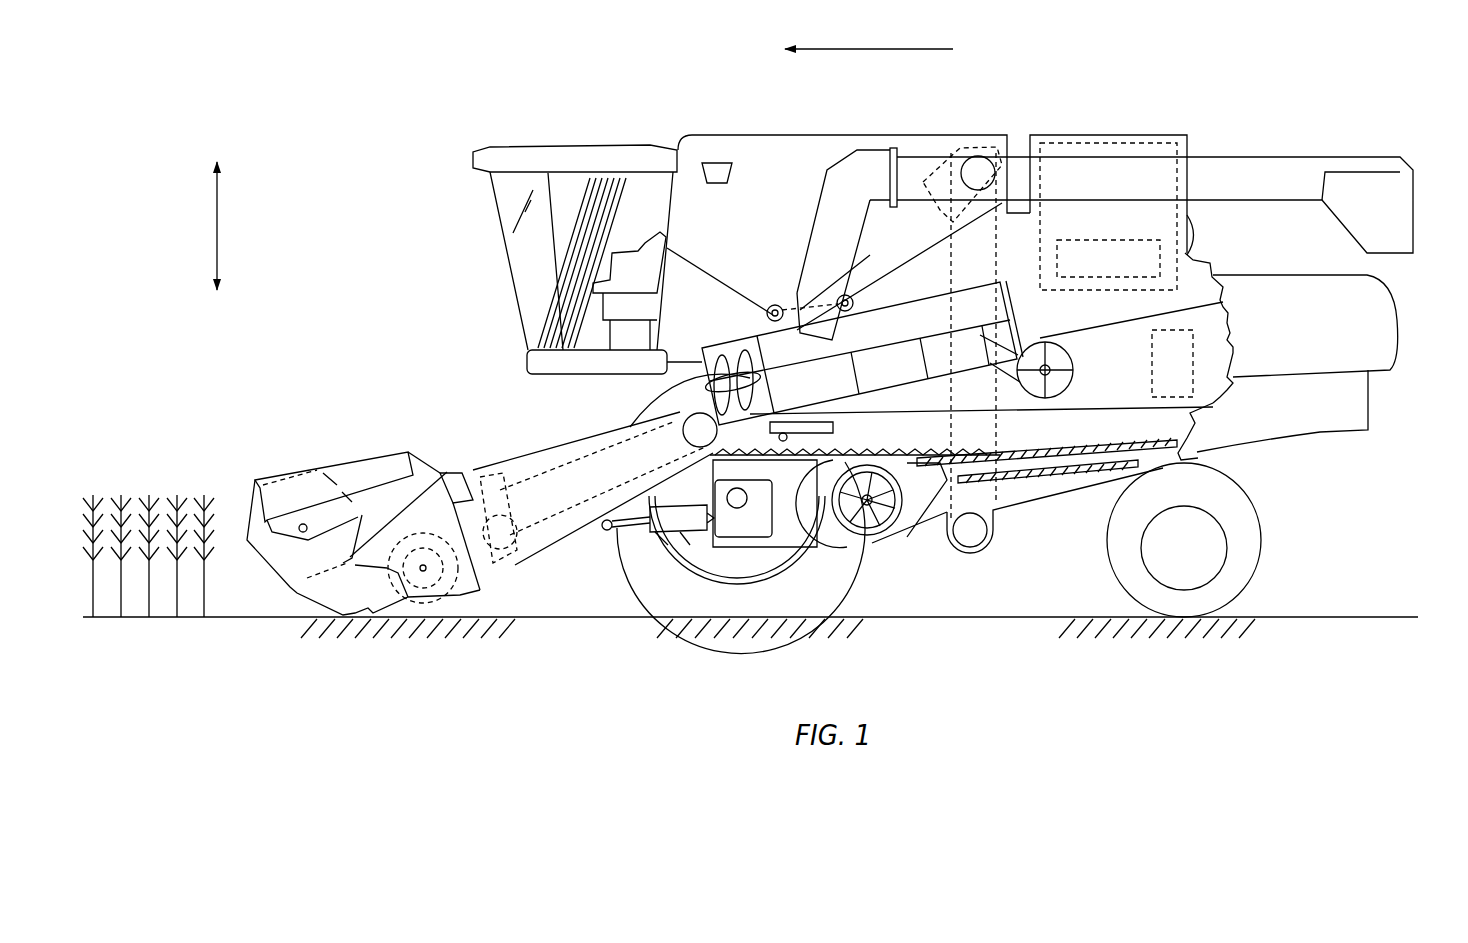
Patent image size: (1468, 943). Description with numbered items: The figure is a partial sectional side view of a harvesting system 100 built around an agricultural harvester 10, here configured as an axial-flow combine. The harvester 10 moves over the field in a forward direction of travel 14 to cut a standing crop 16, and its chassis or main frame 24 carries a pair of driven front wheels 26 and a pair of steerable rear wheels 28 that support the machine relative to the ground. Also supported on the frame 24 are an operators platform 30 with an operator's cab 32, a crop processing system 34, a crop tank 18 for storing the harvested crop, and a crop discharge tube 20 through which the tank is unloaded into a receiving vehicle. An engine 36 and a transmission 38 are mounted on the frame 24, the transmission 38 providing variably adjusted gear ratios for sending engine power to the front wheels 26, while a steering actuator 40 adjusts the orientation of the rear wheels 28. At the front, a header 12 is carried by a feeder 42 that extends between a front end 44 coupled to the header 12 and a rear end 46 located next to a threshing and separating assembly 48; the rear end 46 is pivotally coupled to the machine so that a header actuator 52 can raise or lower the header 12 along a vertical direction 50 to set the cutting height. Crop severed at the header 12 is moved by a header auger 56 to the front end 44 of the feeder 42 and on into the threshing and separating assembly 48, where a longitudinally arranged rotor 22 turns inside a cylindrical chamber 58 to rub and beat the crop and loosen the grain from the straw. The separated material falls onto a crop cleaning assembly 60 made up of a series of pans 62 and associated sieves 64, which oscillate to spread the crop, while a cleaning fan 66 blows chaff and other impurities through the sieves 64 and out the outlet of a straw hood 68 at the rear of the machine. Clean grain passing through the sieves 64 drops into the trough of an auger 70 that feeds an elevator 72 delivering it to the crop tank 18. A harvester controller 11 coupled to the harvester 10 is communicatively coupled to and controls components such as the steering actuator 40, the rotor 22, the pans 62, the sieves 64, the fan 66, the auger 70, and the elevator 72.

The harvesting system 100 is at (346, 108).
The agricultural harvester 10 is at (533, 98).
The harvester controller 11 is at (722, 160).
The header 12 is at (301, 458).
The forward direction of travel 14 is at (887, 47).
The standing crop 16 is at (165, 493).
The crop tank 18 is at (767, 133).
The crop discharge tube 20 is at (1247, 170).
The rotor 22 is at (727, 347).
The frame 24 is at (1192, 458).
The front wheels 26 is at (677, 583).
The rear wheels 28 is at (1255, 555).
The operators platform 30 is at (542, 362).
The operator's cab 32 is at (523, 257).
The crop processing system 34 is at (1089, 401).
The engine 36 is at (1073, 143).
The transmission 38 is at (1091, 240).
The steering actuator 40 is at (1195, 350).
The feeder 42 is at (512, 441).
The front end 44 is at (443, 513).
The rear end 46 is at (662, 400).
The threshing and separating assembly 48 is at (880, 345).
The vertical direction 50 is at (217, 233).
The header actuator 52 is at (640, 573).
The header auger 56 is at (426, 590).
The cylindrical chamber 58 is at (920, 313).
The crop cleaning assembly 60 is at (940, 549).
The pans 62 is at (873, 447).
The sieves 64 is at (1000, 447).
The cleaning fan 66 is at (868, 540).
The straw hood 68 is at (1388, 338).
The auger 70 is at (970, 537).
The elevator 72 is at (998, 226).